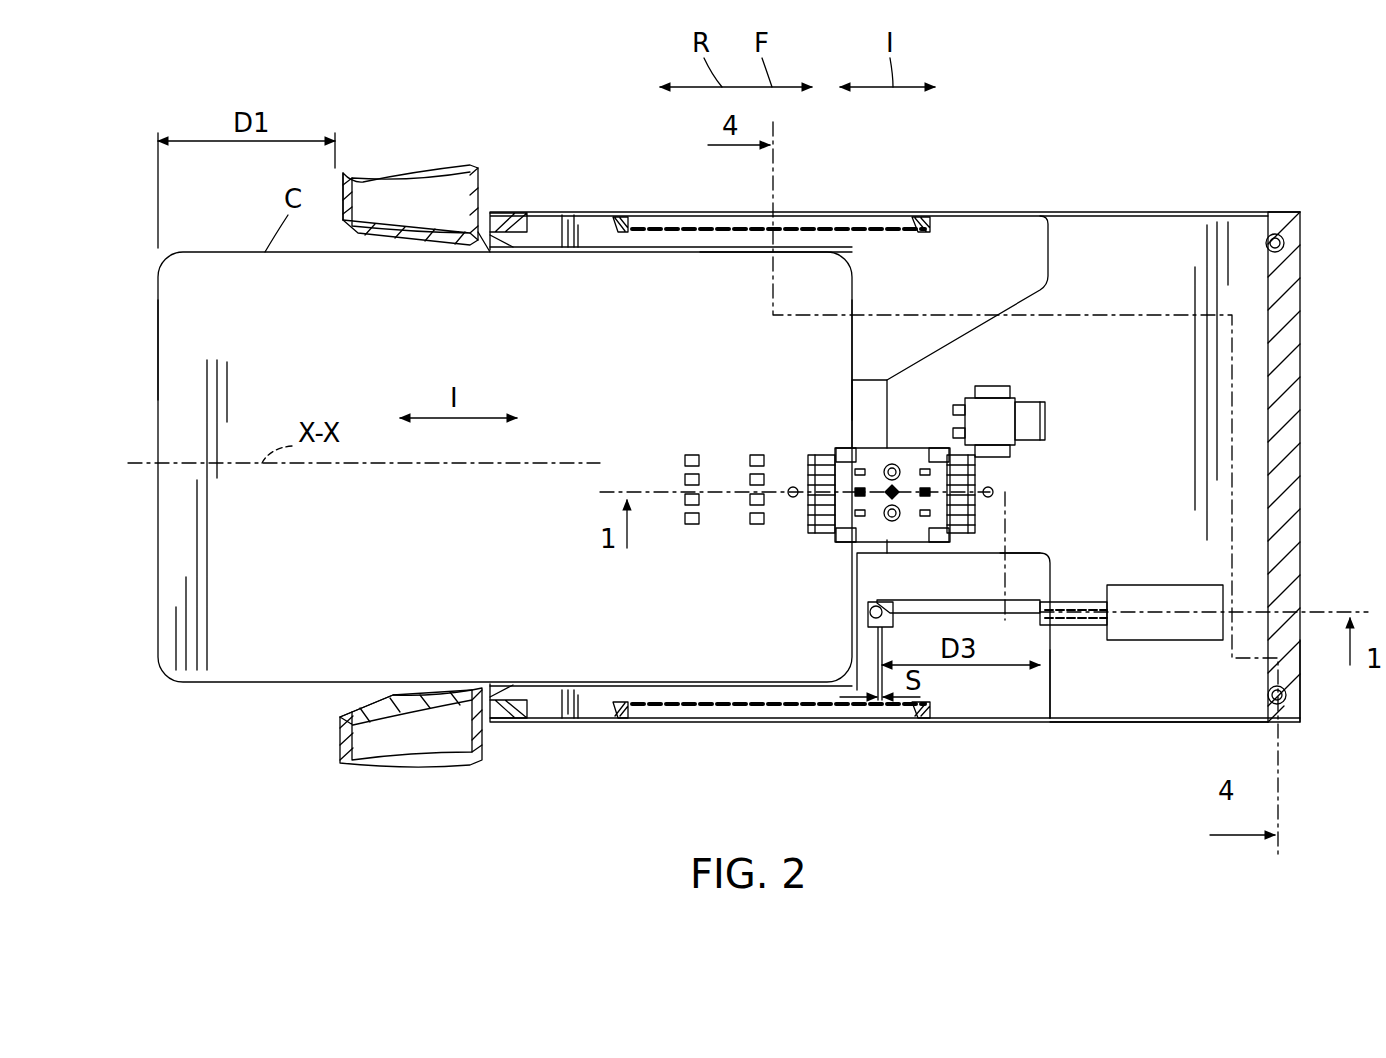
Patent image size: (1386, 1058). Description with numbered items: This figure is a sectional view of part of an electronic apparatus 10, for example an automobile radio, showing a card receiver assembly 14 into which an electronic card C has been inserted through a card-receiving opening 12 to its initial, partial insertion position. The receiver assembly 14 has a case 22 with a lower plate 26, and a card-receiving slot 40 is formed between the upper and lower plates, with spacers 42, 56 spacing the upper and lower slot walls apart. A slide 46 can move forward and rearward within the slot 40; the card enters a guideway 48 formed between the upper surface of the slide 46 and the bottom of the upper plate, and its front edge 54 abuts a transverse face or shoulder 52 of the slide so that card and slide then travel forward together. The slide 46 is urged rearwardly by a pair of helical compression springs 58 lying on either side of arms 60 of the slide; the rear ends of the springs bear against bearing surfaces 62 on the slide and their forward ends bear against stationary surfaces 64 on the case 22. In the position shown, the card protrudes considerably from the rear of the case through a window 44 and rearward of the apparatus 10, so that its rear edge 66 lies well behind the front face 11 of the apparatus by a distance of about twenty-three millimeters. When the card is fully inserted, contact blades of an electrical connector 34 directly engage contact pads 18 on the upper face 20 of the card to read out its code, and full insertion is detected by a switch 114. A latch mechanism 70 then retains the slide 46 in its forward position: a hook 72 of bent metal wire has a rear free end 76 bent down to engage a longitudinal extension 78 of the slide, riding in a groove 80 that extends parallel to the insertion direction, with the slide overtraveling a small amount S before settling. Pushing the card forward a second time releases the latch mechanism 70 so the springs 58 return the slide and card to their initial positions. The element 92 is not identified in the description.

The electronic apparatus 10 is at (360, 204).
The front face 11 is at (342, 198).
The card-receiving opening 12 is at (430, 697).
The card receiver assembly 14 is at (1098, 208).
The contact pads 18 is at (693, 455).
The upper face 20 is at (205, 262).
The case 22 is at (1306, 696).
The lower plate 26 is at (1165, 724).
The electrical connector 34 is at (852, 458).
The slot 40 is at (1172, 275).
The spacer 42 is at (1302, 330).
The window 44 is at (485, 246).
The slide 46 is at (976, 246).
The guideway 48 is at (742, 258).
The transverse face or shoulder 52 is at (852, 356).
The front edge 54 is at (885, 412).
The spacer 56 is at (508, 212).
The helical compression springs 58 is at (812, 212).
The arms 60 is at (640, 246).
The bearing surfaces 62 is at (620, 216).
The stationary surfaces 64 is at (920, 216).
The rear edge 66 is at (158, 342).
The latch mechanism 70 is at (1005, 622).
The hook 72 is at (1082, 601).
The rear free end 76 is at (1030, 628).
The extension 78 is at (1027, 697).
The groove 80 is at (930, 600).
The housing top wall 92 is at (1040, 555).
The switch 114 is at (1050, 408).